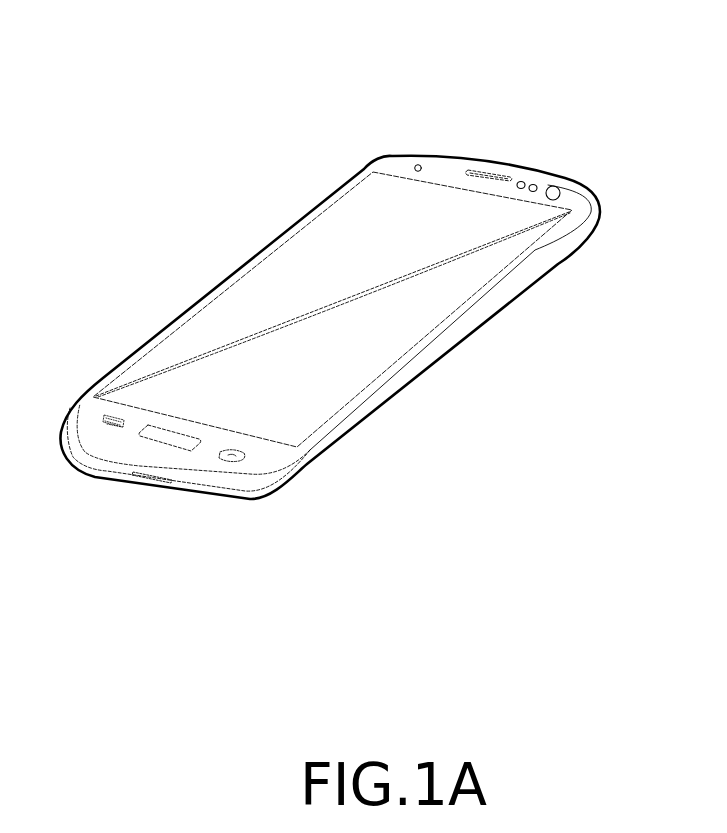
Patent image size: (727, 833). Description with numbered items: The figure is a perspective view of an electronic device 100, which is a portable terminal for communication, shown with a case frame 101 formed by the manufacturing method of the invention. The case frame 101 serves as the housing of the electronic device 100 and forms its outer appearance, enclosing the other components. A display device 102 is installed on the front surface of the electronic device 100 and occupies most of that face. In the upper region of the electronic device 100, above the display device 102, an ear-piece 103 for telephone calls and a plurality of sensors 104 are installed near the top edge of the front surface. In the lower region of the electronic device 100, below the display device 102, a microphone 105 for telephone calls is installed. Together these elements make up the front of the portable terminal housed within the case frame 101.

The electronic device 100 is at (127, 120).
The case frame 101 is at (386, 164).
The display device 102 is at (347, 238).
The ear-piece 103 is at (483, 172).
The sensors 104 is at (533, 184).
The microphone 105 is at (187, 487).